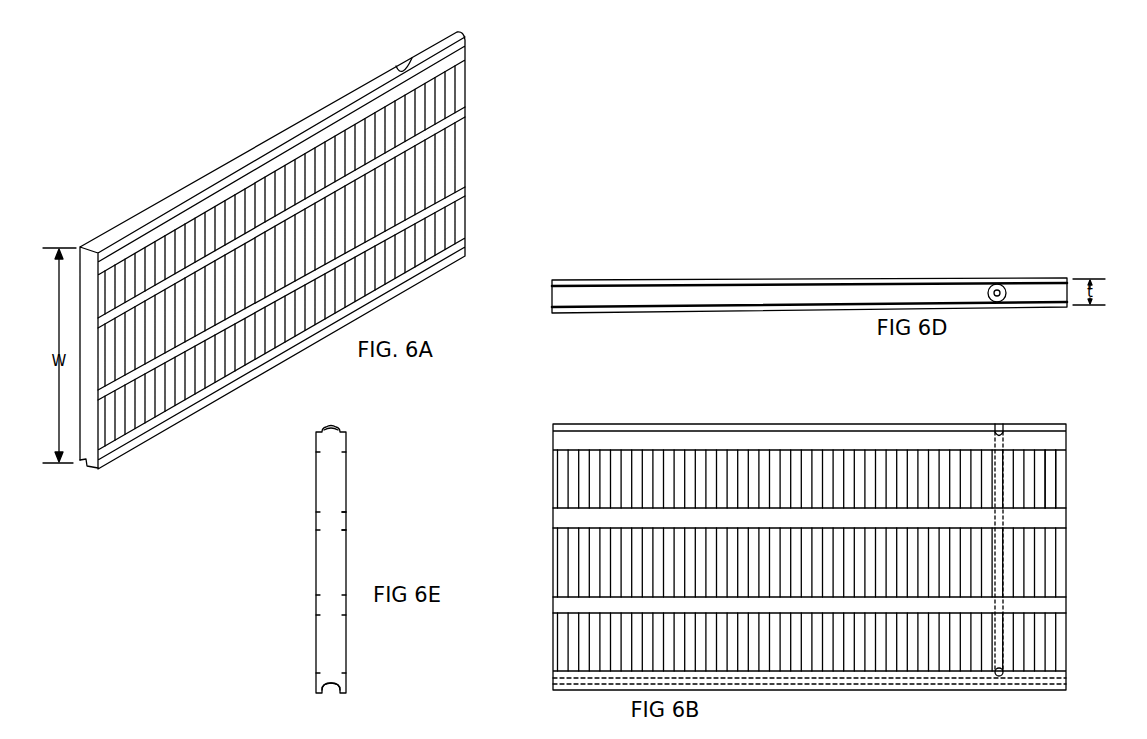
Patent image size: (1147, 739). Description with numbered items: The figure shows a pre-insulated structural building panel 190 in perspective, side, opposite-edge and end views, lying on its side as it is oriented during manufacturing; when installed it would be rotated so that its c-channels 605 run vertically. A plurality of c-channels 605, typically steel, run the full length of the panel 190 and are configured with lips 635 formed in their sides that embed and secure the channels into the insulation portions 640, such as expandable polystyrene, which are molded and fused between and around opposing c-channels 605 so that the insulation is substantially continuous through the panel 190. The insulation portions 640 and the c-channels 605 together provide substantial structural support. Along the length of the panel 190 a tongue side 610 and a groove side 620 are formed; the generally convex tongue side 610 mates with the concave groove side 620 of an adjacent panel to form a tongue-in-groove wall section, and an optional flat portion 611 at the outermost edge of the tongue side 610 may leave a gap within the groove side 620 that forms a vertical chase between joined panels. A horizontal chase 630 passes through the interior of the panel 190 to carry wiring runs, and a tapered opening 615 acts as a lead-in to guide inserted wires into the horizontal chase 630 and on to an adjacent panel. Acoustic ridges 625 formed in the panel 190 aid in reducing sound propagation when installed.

In FIG. 6A, the pre-insulated structural building panel 190 is at (204, 124).
In FIG. 6A, the c-channel 605 is at (468, 243).
In FIG. 6B, the c-channel 605 is at (553, 520).
In FIG. 6E, the c-channel 605 is at (316, 525).
In FIG. 6D, the tongue side 610 is at (595, 297).
In FIG. 6E, the tongue side 610 is at (338, 426).
In FIG. 6E, the flat portion 611 is at (327, 427).
In FIG. 6A, the tapered opening 615 is at (402, 56).
In FIG. 6B, the tapered opening 615 is at (999, 421).
In FIG. 6A, the groove side 620 is at (89, 470).
In FIG. 6B, the groove side 620 is at (1068, 683).
In FIG. 6E, the groove side 620 is at (332, 694).
In FIG. 6B, the acoustic ridges 625 is at (1057, 485).
In FIG. 6B, the horizontal chase 630 is at (993, 462).
In FIG. 6E, the lips 635 is at (347, 530).
In FIG. 6B, the insulation portions 640 is at (562, 482).